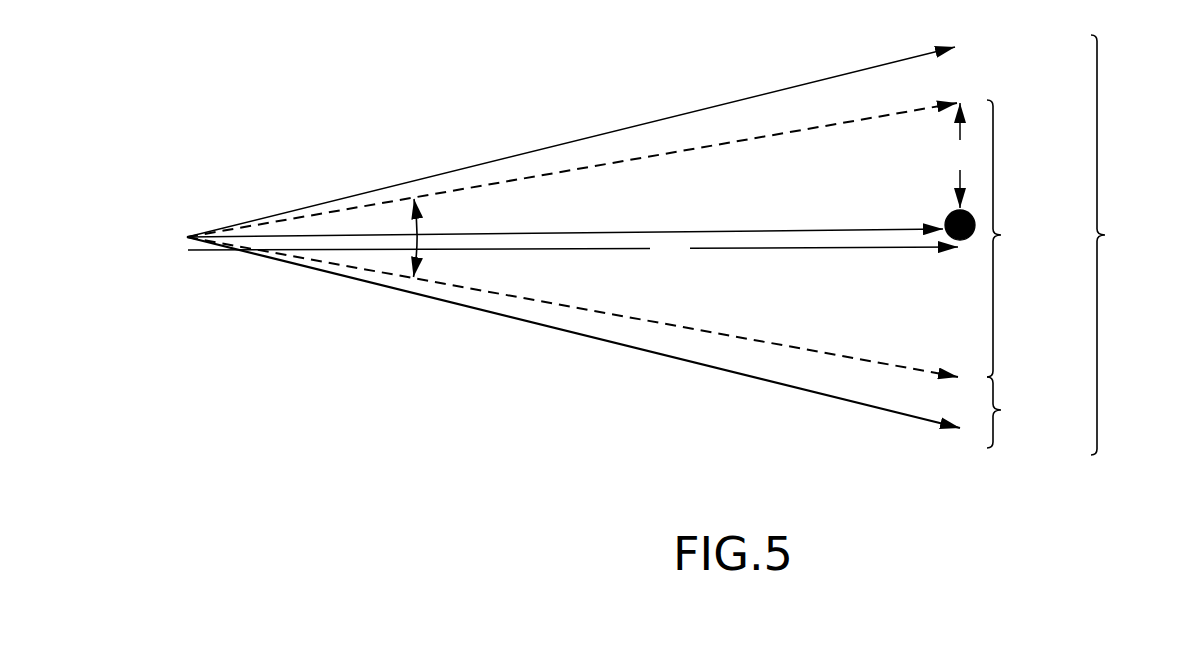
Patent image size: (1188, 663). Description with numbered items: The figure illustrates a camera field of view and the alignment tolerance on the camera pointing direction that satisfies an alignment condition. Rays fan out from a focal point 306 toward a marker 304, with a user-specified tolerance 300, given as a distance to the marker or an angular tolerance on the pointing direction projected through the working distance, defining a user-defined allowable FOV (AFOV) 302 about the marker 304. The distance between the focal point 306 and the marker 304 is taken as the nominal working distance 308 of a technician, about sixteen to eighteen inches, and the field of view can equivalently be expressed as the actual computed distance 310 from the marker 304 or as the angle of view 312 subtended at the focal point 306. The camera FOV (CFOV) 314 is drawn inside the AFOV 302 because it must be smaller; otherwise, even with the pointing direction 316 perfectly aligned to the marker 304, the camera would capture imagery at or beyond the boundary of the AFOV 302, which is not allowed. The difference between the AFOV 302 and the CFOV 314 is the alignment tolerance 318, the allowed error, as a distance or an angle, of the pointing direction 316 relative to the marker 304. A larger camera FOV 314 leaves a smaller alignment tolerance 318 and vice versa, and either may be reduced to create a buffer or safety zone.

The user-specified tolerance 300 is at (946, 44).
The allowable FOV (AFOV) 302 is at (1135, 245).
The marker 304 is at (971, 238).
The focal point 306 is at (188, 250).
The nominal working distance d1 308 is at (728, 251).
The actual computed distance d2 310 is at (957, 132).
The angle of view 312 is at (418, 222).
The camera FOV (CFOV) 314 is at (1031, 238).
The pointing direction 316 is at (792, 231).
The alignment tolerance 318 is at (621, 349).